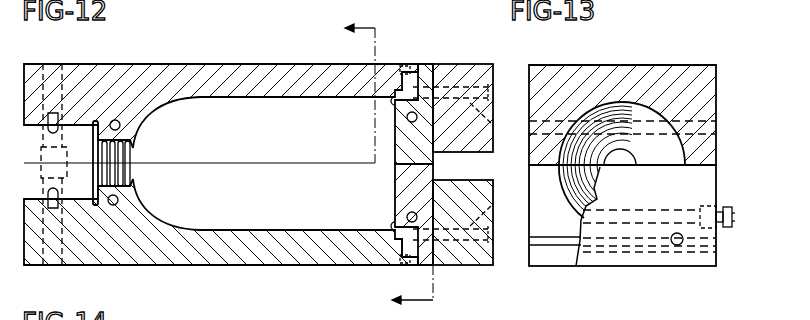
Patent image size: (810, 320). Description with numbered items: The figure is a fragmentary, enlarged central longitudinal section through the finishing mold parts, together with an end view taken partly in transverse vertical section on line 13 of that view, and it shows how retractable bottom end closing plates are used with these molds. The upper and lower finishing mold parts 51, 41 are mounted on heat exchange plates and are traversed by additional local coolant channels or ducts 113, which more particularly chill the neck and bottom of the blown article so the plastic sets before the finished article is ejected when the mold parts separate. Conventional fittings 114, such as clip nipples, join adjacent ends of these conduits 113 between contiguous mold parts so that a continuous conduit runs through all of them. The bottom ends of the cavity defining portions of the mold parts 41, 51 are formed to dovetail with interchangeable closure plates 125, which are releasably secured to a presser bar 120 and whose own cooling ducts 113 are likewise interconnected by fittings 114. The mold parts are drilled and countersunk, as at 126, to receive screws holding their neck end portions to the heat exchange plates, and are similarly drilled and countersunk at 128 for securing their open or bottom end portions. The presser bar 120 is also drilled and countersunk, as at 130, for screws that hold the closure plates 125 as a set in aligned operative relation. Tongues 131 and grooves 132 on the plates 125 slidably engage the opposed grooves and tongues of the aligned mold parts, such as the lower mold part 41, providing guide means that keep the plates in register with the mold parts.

In FIG. 12, the section line 13— 13 is at (403, 167).
In FIG. 12, the lower finishing mold part 41 is at (255, 258).
In FIG. 13, the lower finishing mold part 41 is at (622, 259).
In FIG. 12, the upper finishing mold part 51 is at (226, 69).
In FIG. 13, the upper finishing mold part 51 is at (628, 72).
In FIG. 12, the local coolant channels or ducts 113 is at (120, 127).
In FIG. 13, the local coolant channels or ducts 113 is at (650, 210).
In FIG. 13, the fittings 114 is at (736, 218).
In FIG. 12, the presser bar 120 is at (466, 72).
In FIG. 12, the closure plates 125 is at (400, 185).
In FIG. 12, the drilled and countersunk hole 126 is at (90, 262).
In FIG. 12, the drilled and countersunk hole 128 is at (407, 66).
In FIG. 12, the drilled and countersunk hole 130 is at (493, 124).
In FIG. 13, the drilled and countersunk hole 130 is at (679, 246).
In FIG. 12, the tongues 131 is at (396, 82).
In FIG. 13, the tongues 131 is at (580, 244).
In FIG. 12, the grooves 132 is at (396, 103).
In FIG. 13, the grooves 132 is at (553, 248).